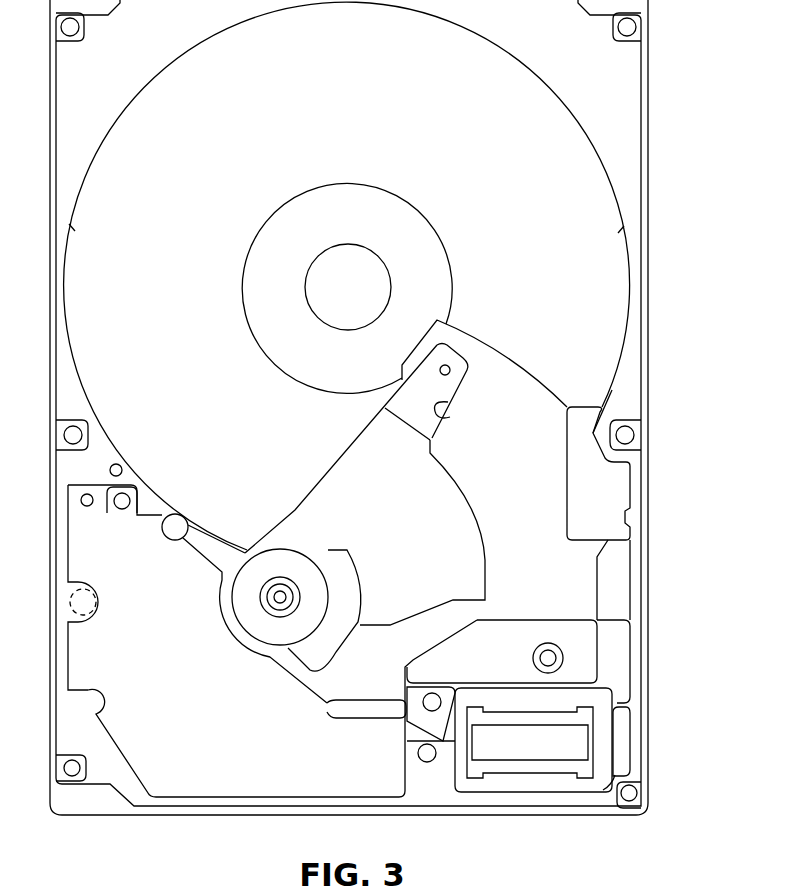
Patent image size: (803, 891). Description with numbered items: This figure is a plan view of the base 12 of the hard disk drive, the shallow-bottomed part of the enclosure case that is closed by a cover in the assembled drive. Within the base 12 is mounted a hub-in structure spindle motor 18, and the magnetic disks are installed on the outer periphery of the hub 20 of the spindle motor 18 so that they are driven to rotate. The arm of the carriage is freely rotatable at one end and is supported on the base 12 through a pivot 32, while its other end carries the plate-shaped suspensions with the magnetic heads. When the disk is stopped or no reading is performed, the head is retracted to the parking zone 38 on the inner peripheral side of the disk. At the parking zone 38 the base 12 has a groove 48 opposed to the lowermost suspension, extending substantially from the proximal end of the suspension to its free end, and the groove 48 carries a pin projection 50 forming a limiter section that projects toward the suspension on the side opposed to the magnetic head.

The base 12 is at (650, 592).
The spindle motor 18 is at (393, 177).
The hub 20 is at (437, 240).
The pivot 32 is at (277, 600).
The parking zone 38 is at (418, 413).
The groove 48 is at (453, 417).
The pin projection 50 is at (449, 366).